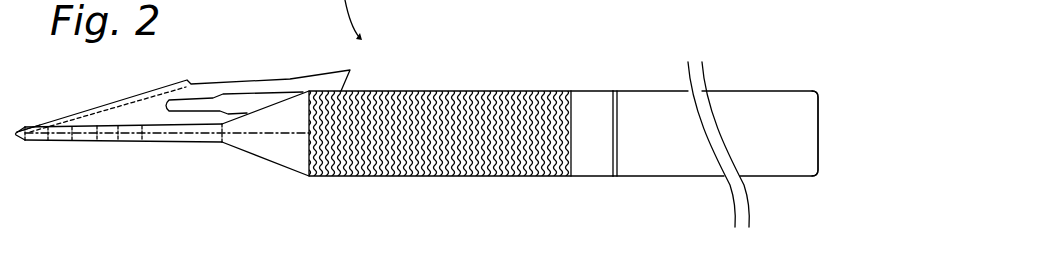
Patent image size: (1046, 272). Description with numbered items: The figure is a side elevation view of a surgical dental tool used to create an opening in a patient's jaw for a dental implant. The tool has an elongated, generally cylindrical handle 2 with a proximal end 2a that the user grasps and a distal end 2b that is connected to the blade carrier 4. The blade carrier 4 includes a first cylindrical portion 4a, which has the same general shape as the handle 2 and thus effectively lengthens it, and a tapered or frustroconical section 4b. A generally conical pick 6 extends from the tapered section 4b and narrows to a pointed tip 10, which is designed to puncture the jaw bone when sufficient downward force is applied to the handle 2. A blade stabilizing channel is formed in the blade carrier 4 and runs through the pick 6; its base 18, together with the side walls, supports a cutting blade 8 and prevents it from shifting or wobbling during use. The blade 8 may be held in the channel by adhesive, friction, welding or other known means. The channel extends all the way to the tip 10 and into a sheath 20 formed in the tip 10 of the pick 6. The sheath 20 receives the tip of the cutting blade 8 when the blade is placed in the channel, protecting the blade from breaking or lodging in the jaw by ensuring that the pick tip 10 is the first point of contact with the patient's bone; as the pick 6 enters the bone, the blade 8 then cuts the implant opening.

The handle 2 is at (726, 123).
The proximal end 2a is at (814, 90).
The distal end 2b is at (616, 90).
The blade carrier 4 is at (417, 136).
The first cylindrical portion 4a is at (445, 178).
The tapered section 4b is at (283, 168).
The pick 6 is at (104, 150).
The cutting blade 8 is at (250, 80).
The pointed tip 10 is at (20, 150).
The base 18 is at (245, 136).
The sheath 20 is at (17, 131).